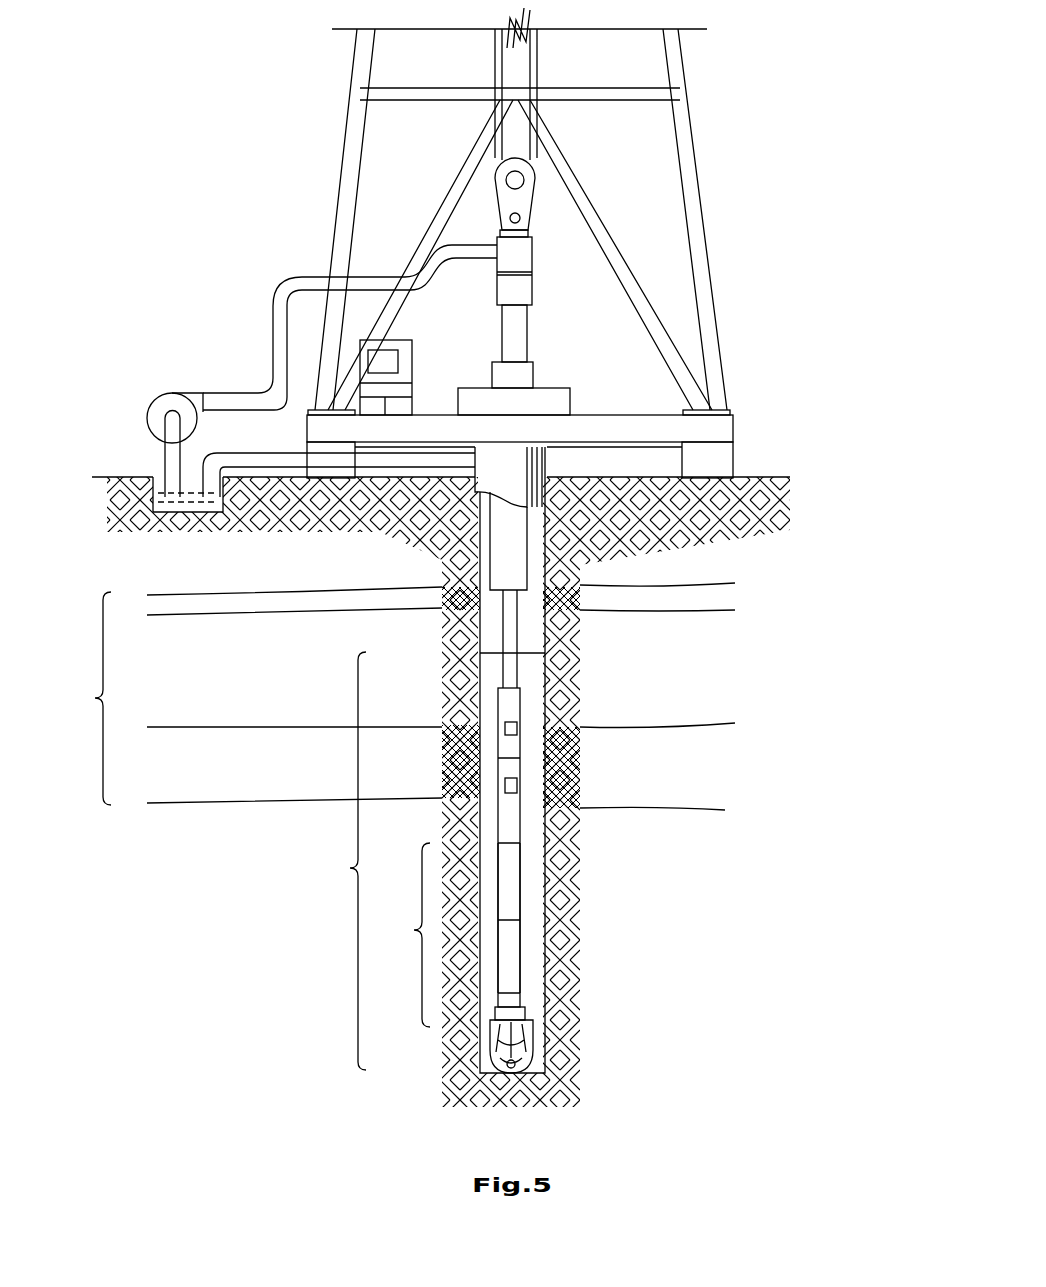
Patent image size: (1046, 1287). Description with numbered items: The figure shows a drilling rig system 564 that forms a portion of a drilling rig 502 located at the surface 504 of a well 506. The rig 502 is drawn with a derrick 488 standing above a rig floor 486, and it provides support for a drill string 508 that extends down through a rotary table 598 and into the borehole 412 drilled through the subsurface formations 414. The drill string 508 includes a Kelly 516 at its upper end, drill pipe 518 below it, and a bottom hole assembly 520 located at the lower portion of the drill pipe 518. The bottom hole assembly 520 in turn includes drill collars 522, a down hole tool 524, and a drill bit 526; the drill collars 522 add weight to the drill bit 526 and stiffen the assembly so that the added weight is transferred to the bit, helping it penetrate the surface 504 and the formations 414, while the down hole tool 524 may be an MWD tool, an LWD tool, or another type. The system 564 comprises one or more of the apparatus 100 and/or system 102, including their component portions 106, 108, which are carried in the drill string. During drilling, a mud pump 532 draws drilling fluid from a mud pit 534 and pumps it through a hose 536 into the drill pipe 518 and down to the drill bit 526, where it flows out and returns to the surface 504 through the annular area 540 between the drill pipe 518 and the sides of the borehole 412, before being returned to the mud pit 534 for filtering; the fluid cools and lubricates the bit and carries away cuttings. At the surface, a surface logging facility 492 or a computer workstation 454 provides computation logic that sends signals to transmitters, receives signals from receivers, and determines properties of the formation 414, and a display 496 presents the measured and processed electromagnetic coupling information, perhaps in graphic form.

The drilling rig system 564 is at (258, 148).
The derrick 488 is at (688, 111).
The drilling rig 502 is at (704, 180).
The hose 536 is at (273, 295).
The mud pump 532 is at (178, 393).
The surface logging facility 492 is at (408, 325).
The computer workstation 454 is at (412, 353).
The display 496 is at (402, 362).
The Kelly 516 is at (527, 330).
The rotary table 598 is at (533, 373).
The rig floor 486 is at (732, 427).
The surface 504 is at (757, 474).
The well 506 is at (553, 471).
The mud pit 534 is at (172, 512).
The drill collars 522 is at (528, 575).
The drill pipe 518 is at (509, 650).
The annular area 540 is at (522, 695).
The apparatus 100 is at (607, 745).
The system 102 is at (518, 727).
The subsurface formations 414 is at (416, 792).
The bottom hole assembly 520 is at (417, 782).
The drill string 508 is at (528, 830).
The component 106 is at (515, 887).
The borehole 412 is at (540, 940).
The down hole tool 524 is at (397, 935).
The component 108 is at (515, 980).
The drill bit 526 is at (527, 1022).